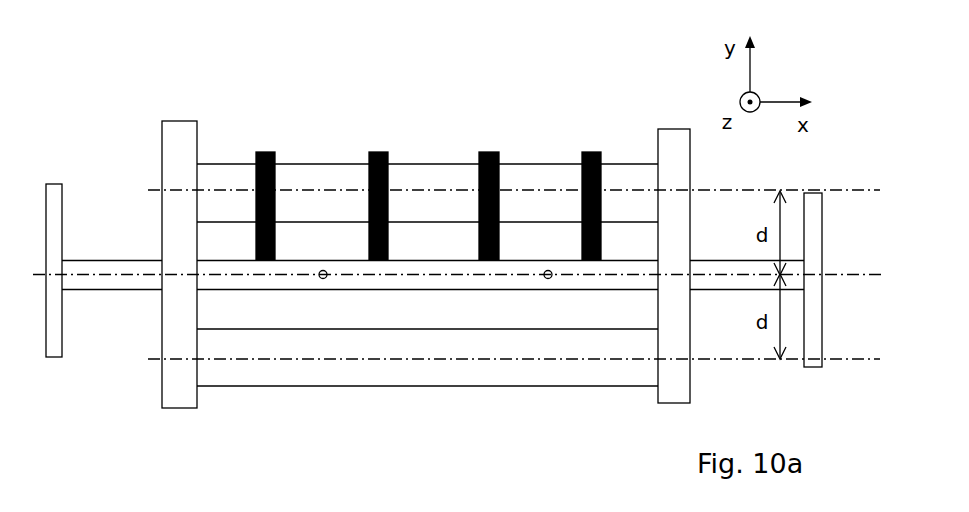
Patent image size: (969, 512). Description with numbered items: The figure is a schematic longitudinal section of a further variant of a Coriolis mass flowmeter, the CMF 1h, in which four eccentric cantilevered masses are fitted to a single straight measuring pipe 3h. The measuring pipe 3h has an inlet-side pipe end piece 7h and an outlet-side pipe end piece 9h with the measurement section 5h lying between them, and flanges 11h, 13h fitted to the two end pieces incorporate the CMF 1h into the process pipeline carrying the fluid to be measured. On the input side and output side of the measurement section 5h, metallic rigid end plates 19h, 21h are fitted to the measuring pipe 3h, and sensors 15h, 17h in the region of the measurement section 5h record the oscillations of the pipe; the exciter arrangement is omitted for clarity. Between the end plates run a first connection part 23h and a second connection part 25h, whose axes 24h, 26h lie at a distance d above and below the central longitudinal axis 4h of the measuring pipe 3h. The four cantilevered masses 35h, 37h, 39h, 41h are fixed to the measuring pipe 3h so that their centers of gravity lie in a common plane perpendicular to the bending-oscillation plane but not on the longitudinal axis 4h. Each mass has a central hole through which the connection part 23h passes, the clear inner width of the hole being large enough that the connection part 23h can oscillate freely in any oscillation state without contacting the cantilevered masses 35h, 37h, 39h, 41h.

The CMF 1h is at (482, 482).
The measuring pipe 3h is at (143, 297).
The longitudinal axis 4h is at (470, 292).
The measurement section 5h is at (273, 278).
The inlet-side pipe end piece 7h is at (112, 272).
The outlet-side pipe end piece 9h is at (723, 273).
The flange 11h is at (55, 202).
The flange 13h is at (817, 348).
The sensor 15h is at (325, 270).
The sensor 17h is at (547, 271).
The end plate 19h is at (182, 135).
The end plate 21h is at (670, 142).
The first connection part 23h is at (297, 175).
The axis of connection part 24h is at (862, 190).
The second connection part 25h is at (247, 363).
The axis of connection part 26h is at (527, 373).
The cantilevered mass 35h is at (257, 152).
The cantilevered mass 37h is at (388, 152).
The cantilevered mass 39h is at (582, 153).
The cantilevered mass 41h is at (483, 153).